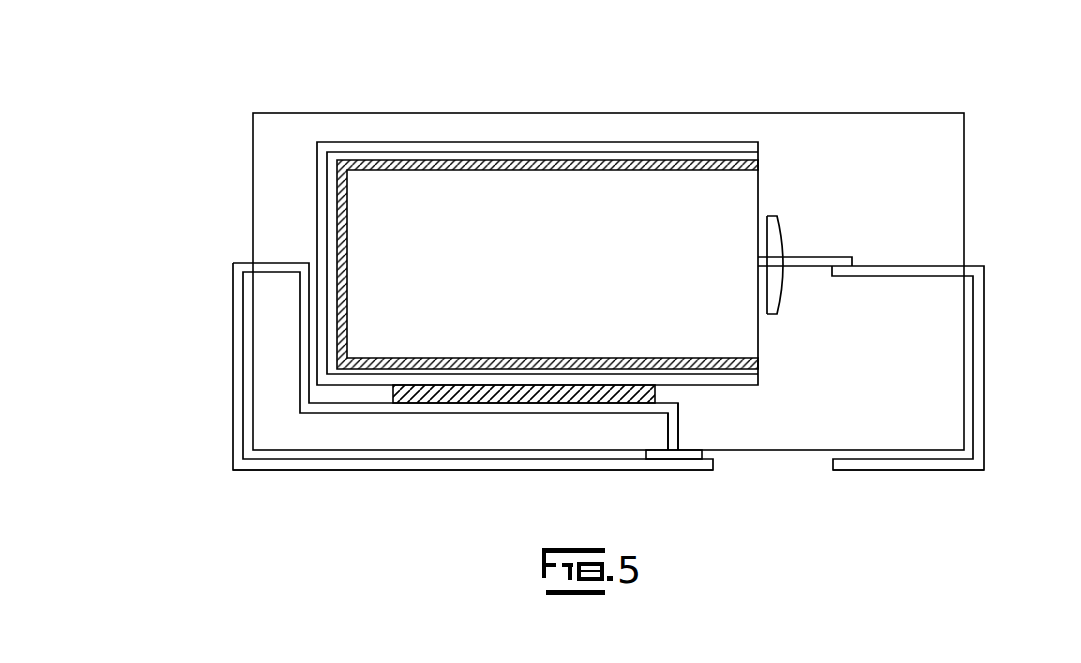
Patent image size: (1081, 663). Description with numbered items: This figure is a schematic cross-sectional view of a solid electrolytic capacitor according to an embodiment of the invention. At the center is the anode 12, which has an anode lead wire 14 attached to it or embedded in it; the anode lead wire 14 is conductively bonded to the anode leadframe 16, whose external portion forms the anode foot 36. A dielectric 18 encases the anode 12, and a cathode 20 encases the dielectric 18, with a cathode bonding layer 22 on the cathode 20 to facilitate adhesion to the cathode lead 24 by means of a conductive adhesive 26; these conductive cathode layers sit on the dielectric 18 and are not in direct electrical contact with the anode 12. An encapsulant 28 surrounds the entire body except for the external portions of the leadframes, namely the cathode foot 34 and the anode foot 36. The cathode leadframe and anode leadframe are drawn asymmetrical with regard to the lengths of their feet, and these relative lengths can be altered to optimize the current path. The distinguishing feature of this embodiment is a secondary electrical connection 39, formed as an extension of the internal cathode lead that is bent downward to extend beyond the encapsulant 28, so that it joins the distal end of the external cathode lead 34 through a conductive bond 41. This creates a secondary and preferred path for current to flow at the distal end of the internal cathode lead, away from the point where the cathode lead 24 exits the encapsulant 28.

The anode 12 is at (542, 280).
The anode lead wire 14 is at (805, 257).
The anode leadframe 16 is at (985, 379).
The dielectric 18 is at (677, 163).
The cathode 20 is at (565, 155).
The cathode bonding layer 22 is at (455, 147).
The cathode lead 24 is at (233, 375).
The conductive adhesive 26 is at (468, 397).
The encapsulant 28 is at (935, 180).
The cathode foot 34 is at (327, 472).
The anode foot 36 is at (919, 467).
The secondary electrical connection 39 is at (678, 430).
The conductive bond 41 is at (676, 457).